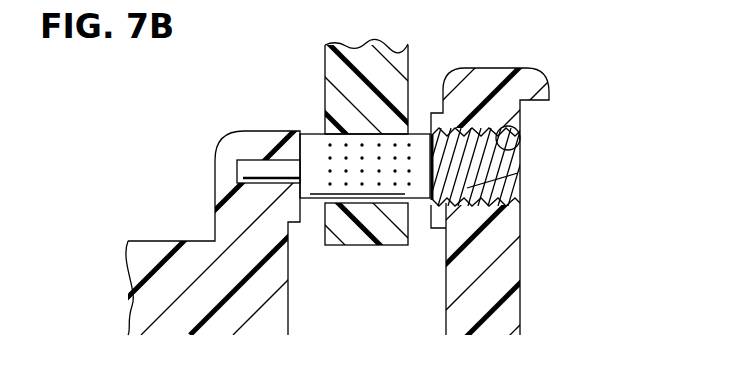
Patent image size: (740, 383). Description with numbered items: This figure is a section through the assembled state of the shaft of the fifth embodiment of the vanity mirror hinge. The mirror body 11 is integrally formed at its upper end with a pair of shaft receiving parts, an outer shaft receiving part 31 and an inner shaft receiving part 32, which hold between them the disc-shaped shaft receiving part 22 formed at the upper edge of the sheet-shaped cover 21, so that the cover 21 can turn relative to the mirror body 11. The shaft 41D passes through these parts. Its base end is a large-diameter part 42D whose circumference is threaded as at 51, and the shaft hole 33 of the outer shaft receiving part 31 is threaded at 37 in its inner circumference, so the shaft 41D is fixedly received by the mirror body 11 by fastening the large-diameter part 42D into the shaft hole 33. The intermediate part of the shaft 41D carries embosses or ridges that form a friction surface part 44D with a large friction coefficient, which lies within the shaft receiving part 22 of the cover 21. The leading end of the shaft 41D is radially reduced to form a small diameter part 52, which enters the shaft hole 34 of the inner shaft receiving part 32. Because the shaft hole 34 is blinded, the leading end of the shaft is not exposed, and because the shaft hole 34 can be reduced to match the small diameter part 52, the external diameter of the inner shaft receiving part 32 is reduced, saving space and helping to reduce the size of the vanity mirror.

The mirror body 11 is at (510, 308).
The cover 21 is at (378, 65).
The shaft receiving part 22 is at (345, 106).
The outer shaft receiving part 31 is at (525, 82).
The inner shaft receiving part 32 is at (230, 232).
The shaft hole 33 is at (465, 200).
The thread 37 is at (520, 148).
The shaft hole 34 is at (235, 170).
The small diameter part 52 is at (253, 178).
The shaft 41D is at (522, 166).
The large-diameter part 42D is at (518, 238).
The friction surface part 44D is at (370, 178).
The thread 51 is at (518, 174).